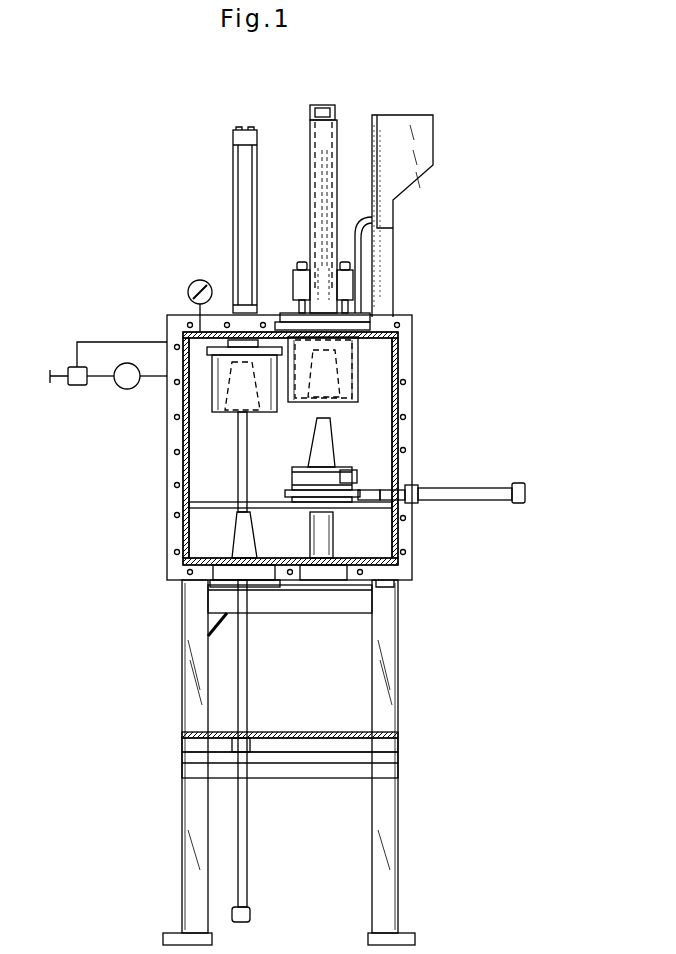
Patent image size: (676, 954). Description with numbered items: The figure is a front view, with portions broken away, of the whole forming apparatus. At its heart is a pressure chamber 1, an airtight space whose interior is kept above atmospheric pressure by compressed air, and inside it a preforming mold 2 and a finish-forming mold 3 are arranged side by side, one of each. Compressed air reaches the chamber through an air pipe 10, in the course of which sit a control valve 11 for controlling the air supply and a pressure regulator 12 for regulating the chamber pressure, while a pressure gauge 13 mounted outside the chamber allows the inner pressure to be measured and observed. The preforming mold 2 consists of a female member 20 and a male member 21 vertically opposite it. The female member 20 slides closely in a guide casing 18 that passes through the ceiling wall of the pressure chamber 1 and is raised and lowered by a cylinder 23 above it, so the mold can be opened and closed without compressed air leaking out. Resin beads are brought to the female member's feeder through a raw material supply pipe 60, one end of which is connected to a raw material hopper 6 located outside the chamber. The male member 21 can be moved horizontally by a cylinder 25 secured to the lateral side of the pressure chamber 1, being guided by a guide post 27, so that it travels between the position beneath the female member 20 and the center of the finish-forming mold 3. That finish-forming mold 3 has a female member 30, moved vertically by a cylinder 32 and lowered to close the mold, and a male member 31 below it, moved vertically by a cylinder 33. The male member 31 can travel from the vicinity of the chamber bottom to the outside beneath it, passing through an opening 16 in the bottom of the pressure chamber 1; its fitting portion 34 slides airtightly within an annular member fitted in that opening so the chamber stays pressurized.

The pressure chamber 1 is at (400, 355).
The preforming mold 2 is at (366, 408).
The finish-forming mold 3 is at (213, 418).
The raw material hopper 6 is at (418, 165).
The air pipe 10 is at (155, 378).
The control valve 11 is at (118, 389).
The pressure regulator 12 is at (68, 368).
The pressure gauge 13 is at (195, 284).
The opening 16 is at (215, 590).
The guide casing 18 is at (380, 328).
The female member 20 is at (358, 377).
The male member 21 is at (322, 450).
The cylinder 23 is at (322, 160).
The cylinder 25 is at (447, 493).
The guide post 27 is at (283, 511).
The female member 30 is at (242, 400).
The male member 31 is at (237, 530).
The cylinder 32 is at (240, 188).
The cylinder 33 is at (242, 802).
The fitting portion 34 is at (220, 593).
The raw material supply pipe 60 is at (362, 257).